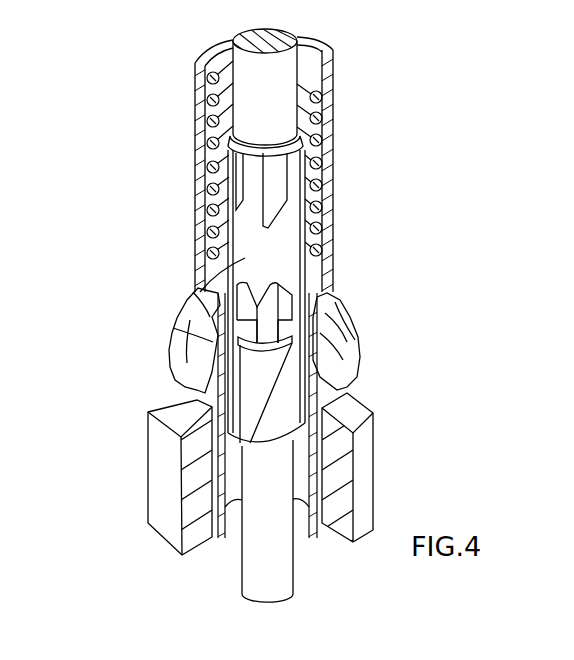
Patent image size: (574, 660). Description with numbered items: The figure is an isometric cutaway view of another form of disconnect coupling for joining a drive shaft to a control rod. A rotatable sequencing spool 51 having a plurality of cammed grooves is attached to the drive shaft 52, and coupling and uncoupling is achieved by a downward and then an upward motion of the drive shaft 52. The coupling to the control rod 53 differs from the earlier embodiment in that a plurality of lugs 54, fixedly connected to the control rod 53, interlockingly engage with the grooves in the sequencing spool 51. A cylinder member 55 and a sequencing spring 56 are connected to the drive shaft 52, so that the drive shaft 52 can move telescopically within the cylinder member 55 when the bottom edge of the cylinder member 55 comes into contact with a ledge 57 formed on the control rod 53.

The rotatable sequencing spool 51 is at (230, 268).
The drive shaft 52 is at (285, 63).
The control rod 53 is at (173, 341).
The lugs 54 is at (273, 285).
The cylinder member 55 is at (334, 163).
The sequencing spring 56 is at (322, 118).
The ledge 57 is at (317, 312).